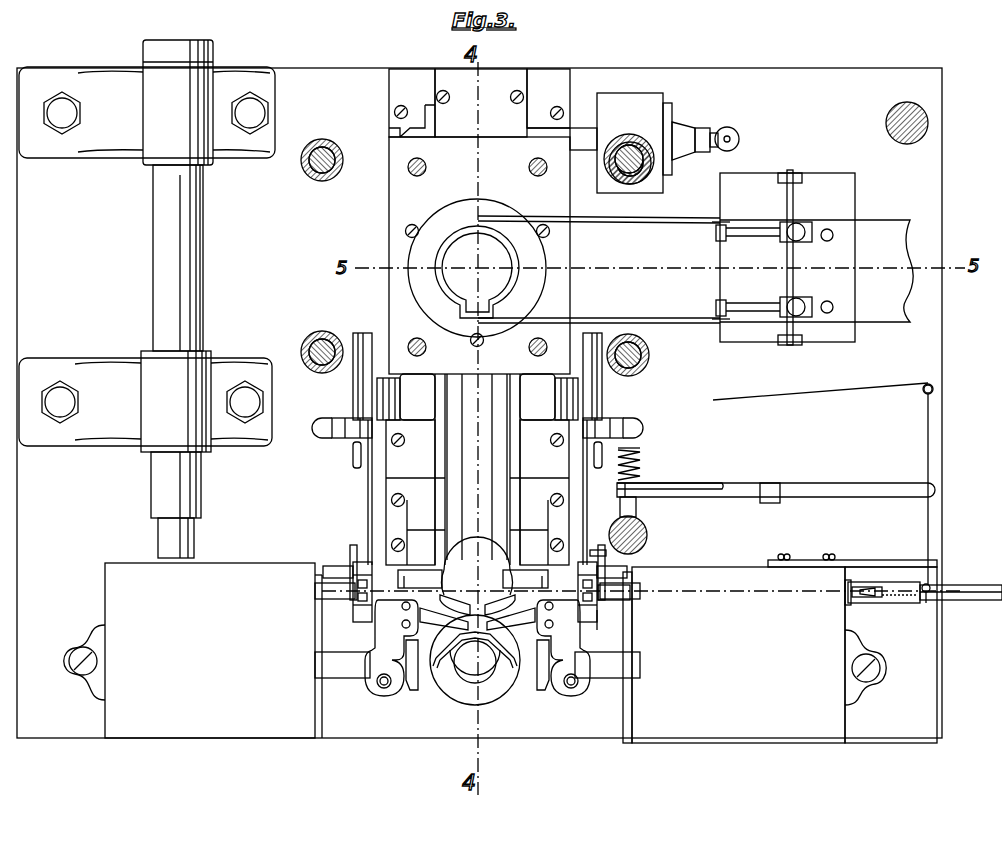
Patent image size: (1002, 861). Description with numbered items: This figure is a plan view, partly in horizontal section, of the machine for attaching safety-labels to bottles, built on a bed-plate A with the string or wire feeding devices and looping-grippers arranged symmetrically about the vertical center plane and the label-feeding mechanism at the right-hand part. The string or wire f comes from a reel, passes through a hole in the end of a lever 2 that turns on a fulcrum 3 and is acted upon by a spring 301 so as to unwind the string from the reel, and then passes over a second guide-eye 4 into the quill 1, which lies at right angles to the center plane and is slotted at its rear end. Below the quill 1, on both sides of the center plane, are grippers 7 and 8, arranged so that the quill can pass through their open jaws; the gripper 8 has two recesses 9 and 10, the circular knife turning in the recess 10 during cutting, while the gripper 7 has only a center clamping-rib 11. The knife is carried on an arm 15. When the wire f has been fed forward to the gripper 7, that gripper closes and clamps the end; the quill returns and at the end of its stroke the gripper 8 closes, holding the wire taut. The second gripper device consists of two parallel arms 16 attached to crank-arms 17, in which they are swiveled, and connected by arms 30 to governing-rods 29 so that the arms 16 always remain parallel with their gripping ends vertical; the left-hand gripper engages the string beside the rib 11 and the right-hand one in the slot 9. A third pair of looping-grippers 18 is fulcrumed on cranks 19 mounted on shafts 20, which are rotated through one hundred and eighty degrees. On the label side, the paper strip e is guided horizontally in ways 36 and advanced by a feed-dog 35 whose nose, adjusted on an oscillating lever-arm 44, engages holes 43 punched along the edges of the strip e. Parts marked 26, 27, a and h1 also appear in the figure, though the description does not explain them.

The bed-plate A is at (479, 403).
The quill 1 is at (965, 590).
The lever 2 is at (845, 492).
The fulcrum 3 is at (770, 483).
The second guide-eye 4 is at (923, 604).
The gripper 7 is at (362, 592).
The gripper 8 is at (587, 592).
The recess 9 is at (590, 617).
The recess 10 is at (596, 608).
The center clamping-rib 11 is at (356, 570).
The arm 15 is at (602, 545).
The parallel arms 16 is at (368, 500).
The crank-arms 17 is at (414, 380).
The looping-grippers 18 is at (428, 628).
The cranks 19 is at (477, 648).
The shafts 20 is at (315, 591).
The block 26 is at (412, 690).
The clip 27 is at (440, 652).
The governing-rods 29 is at (337, 418).
The arms 30 is at (342, 436).
The spring 301 is at (642, 456).
The feed-dog 35 is at (716, 240).
The ways 36 is at (665, 225).
The holes 43 is at (833, 236).
The oscillating lever-arm 44 is at (752, 230).
The ring a is at (490, 700).
The strip of paper e is at (873, 269).
The string or wire f is at (926, 437).
The head h1 is at (477, 566).